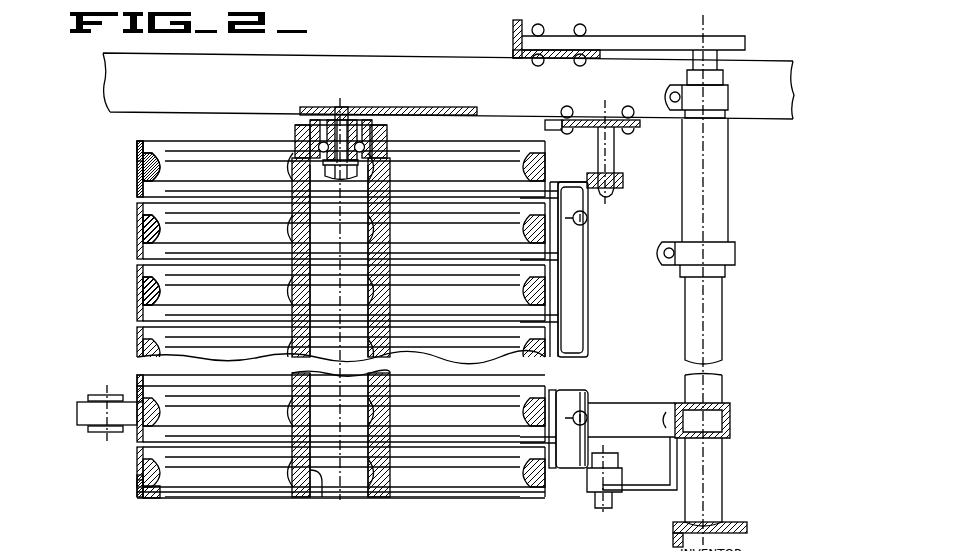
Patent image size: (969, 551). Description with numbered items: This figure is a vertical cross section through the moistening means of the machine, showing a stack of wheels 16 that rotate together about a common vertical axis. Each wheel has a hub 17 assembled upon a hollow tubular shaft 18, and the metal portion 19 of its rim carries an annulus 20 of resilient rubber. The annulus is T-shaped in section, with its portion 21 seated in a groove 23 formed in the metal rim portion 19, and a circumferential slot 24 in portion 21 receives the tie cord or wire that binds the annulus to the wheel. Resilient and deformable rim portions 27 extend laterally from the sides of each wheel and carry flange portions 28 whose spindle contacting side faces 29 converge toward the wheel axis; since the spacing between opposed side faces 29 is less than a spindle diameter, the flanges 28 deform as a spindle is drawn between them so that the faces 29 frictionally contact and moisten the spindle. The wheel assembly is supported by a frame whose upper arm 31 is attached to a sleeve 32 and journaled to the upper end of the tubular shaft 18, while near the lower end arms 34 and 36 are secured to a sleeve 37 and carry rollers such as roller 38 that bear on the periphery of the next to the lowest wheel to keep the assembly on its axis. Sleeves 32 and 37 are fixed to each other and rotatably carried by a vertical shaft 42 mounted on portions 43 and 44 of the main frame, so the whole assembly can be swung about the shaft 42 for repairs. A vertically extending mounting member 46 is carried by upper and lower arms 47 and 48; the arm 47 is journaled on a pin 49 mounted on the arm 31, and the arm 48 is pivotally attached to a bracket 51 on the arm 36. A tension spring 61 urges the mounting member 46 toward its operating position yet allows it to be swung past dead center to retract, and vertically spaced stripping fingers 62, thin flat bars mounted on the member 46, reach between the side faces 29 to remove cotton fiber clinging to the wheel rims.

The wheels 16 is at (214, 498).
The hub 17 is at (292, 455).
The hollow tubular shaft 18 is at (322, 485).
The metal portion of the wheel rim 19 is at (150, 155).
The annulus 20 is at (137, 488).
The portion of the annulus 21 is at (165, 158).
The groove 23 is at (153, 499).
The circumferential slot 24 is at (137, 230).
The rim portions 27 is at (140, 385).
The flange portions 28 is at (146, 146).
The side faces 29 is at (137, 322).
The upper arm 31 is at (472, 107).
The sleeve 32 is at (720, 165).
The arm 34 is at (80, 404).
The arm 36 is at (728, 410).
The sleeve 37 is at (712, 465).
The roller 38 is at (82, 418).
The vertical shaft 42 is at (718, 70).
The portion 43 is at (560, 57).
The portion 44 is at (735, 522).
The mounting member 46 is at (578, 300).
The upper arm 47 is at (566, 182).
The lower arm 48 is at (573, 468).
The pin 49 is at (610, 151).
The bracket 51 is at (654, 486).
The tension spring 61 is at (588, 220).
The stripping fingers 62 is at (505, 440).